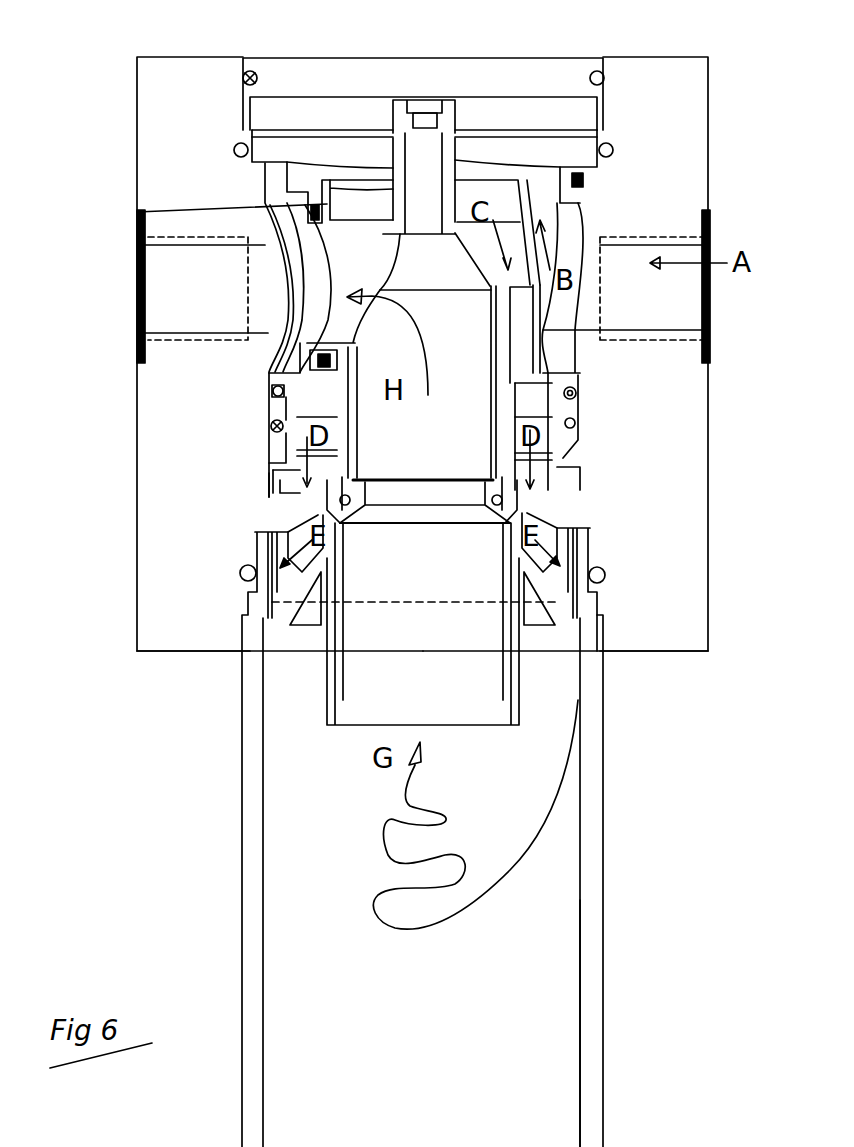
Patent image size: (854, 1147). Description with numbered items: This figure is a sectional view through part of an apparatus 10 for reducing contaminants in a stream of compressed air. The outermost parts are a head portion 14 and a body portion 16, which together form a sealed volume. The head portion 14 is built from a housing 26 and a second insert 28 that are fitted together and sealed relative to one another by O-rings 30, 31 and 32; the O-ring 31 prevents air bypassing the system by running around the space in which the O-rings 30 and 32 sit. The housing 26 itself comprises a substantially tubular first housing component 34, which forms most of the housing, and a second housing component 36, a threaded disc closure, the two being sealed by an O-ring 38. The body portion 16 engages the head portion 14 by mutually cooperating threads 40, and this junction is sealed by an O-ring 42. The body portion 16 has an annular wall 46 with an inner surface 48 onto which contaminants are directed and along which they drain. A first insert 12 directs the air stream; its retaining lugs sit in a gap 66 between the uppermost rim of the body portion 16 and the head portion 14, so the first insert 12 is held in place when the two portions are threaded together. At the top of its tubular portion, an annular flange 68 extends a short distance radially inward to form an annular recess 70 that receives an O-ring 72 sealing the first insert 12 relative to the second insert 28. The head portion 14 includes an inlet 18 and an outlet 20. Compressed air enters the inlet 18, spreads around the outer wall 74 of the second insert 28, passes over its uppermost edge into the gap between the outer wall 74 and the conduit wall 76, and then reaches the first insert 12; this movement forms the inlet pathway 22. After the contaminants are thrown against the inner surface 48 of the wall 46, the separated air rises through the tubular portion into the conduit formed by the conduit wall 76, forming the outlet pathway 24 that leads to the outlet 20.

The apparatus 10 is at (705, 762).
The first insert 12 is at (300, 578).
The head portion 14 is at (155, 607).
The body portion 16 is at (252, 803).
The inlet 18 is at (687, 293).
The outlet 20 is at (152, 287).
The inlet pathway 22 is at (570, 247).
The outlet pathway 24 is at (270, 355).
The housing 26 is at (715, 665).
The second insert 28 is at (268, 333).
The O-ring 30 is at (268, 428).
The O-ring 31 is at (520, 210).
The O-ring 32 is at (280, 150).
The first housing component 34 is at (692, 548).
The second housing component 36 is at (330, 78).
The O-ring 38 is at (245, 72).
The threads 40 is at (602, 633).
The O-ring 42 is at (237, 568).
The annular wall 46 is at (592, 893).
The inner surface 48 is at (577, 1013).
The gap 66 is at (255, 537).
The annular flange 68 is at (497, 500).
The annular recess 70 is at (277, 487).
The O-ring 72 is at (560, 482).
The outer wall 74 is at (137, 212).
The conduit wall 76 is at (268, 385).